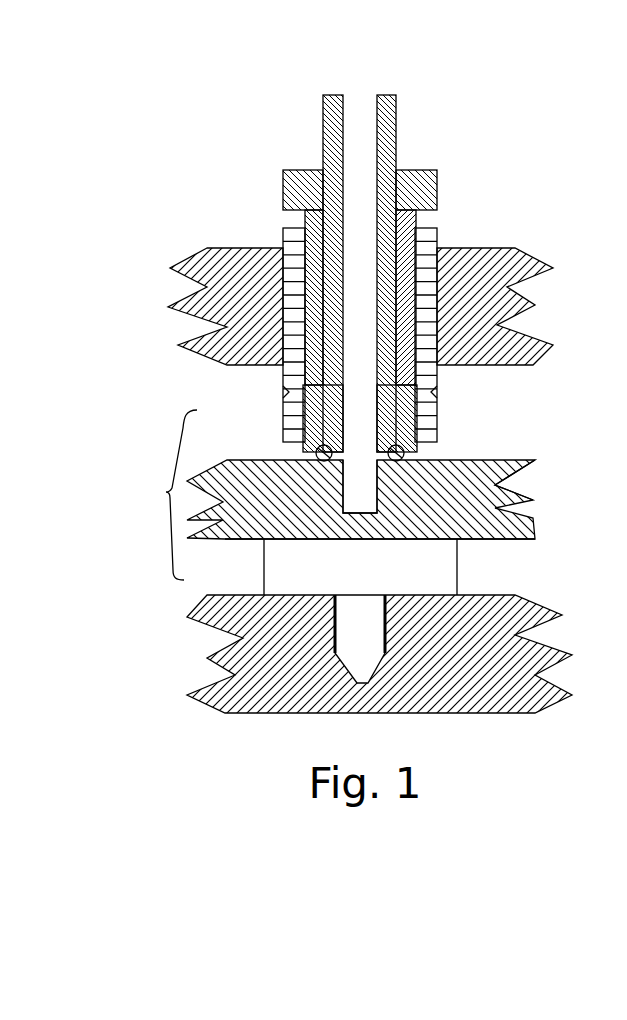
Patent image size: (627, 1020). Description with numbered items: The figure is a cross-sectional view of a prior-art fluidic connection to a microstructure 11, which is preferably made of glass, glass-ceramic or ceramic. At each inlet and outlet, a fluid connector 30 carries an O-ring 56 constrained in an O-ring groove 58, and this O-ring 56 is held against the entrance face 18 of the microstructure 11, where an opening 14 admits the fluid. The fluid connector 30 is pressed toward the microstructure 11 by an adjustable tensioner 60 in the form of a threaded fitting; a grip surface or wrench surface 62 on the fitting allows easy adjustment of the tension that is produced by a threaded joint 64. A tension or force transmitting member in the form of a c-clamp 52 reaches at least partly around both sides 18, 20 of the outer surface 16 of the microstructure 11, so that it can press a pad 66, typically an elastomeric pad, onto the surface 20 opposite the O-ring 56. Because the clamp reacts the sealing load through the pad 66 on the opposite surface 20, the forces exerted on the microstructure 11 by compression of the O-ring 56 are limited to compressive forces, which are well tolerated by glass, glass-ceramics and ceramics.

The microstructure 11 is at (490, 472).
The bore in first plate 14 is at (360, 497).
The outer surface 16 is at (167, 495).
The entrance face 18 is at (262, 460).
The opposite surface 20 is at (227, 540).
The fluid connector 30 is at (393, 130).
The c-clamp 52 is at (207, 268).
The O-ring 56 is at (392, 447).
The O-ring groove 58 is at (403, 437).
The adjustable tensioner 60 is at (410, 217).
The grip surface or wrench surface 62 is at (437, 187).
The threaded joint 64 is at (427, 230).
The pad 66 is at (435, 572).